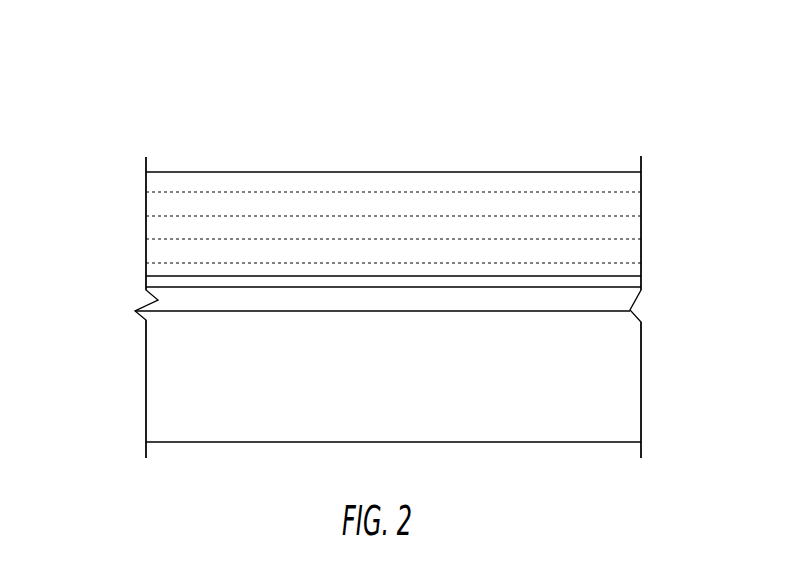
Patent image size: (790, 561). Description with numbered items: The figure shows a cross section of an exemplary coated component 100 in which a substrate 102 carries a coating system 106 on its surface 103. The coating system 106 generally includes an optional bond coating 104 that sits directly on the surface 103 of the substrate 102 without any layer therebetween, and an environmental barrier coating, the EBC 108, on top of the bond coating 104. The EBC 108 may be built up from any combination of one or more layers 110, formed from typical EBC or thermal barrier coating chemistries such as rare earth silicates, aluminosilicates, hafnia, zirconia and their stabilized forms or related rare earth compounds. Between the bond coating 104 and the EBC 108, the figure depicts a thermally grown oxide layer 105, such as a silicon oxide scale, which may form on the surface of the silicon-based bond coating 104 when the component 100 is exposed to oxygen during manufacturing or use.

The coated component 100 is at (86, 115).
The substrate 102 is at (262, 402).
The surface 103 is at (456, 306).
The bond coating 104 is at (618, 303).
The thermally grown oxide layer 105 is at (641, 278).
The coating system 106 is at (125, 232).
The EBC 108 is at (455, 178).
The layers 110 is at (597, 200).